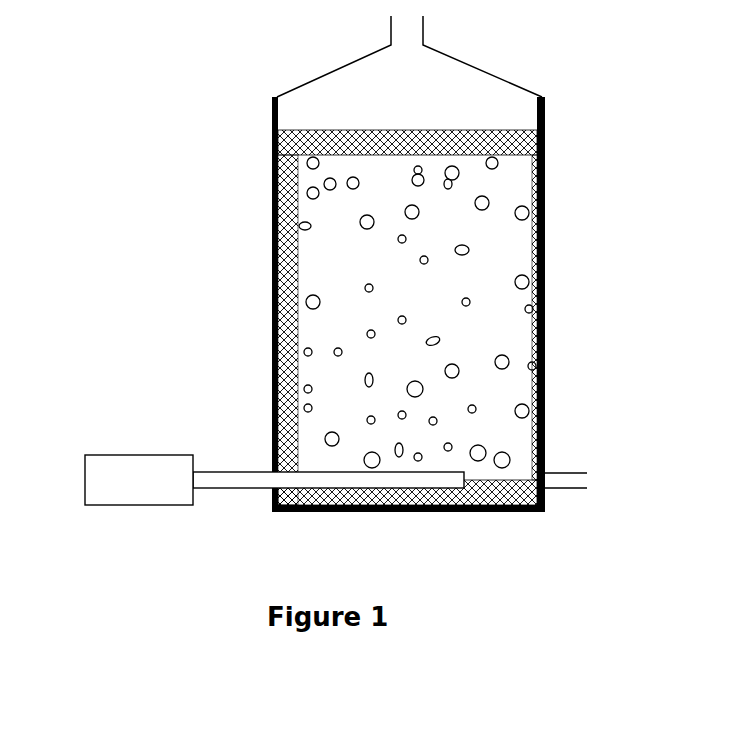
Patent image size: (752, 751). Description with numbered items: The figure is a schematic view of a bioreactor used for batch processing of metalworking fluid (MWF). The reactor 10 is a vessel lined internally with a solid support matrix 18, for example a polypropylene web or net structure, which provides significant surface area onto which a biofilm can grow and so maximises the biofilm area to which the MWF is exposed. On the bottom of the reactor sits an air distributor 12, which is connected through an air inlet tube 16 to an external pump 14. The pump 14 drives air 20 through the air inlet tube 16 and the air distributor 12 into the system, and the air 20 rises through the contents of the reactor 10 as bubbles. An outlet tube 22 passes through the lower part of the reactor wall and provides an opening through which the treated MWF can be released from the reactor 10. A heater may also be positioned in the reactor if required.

The reactor 10 is at (256, 111).
The air distributor 12 is at (392, 510).
The pump 14 is at (85, 468).
The air inlet tube 16 is at (238, 471).
The solid support matrix 18 is at (277, 267).
The air 20 is at (529, 411).
The outlet tube 22 is at (567, 492).